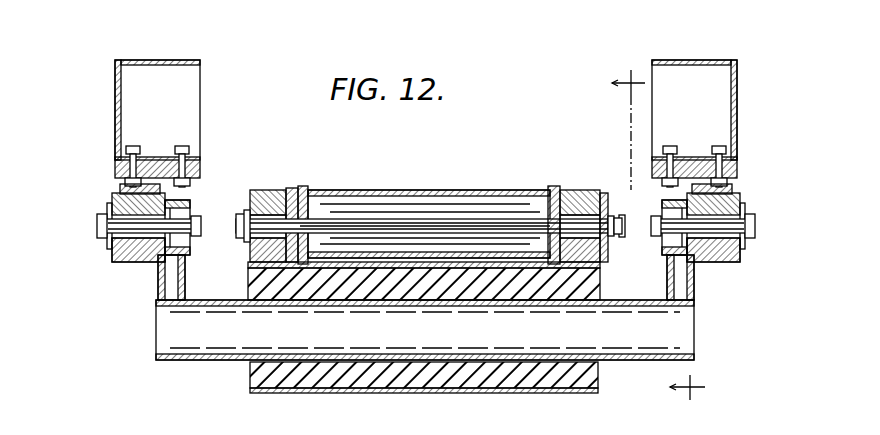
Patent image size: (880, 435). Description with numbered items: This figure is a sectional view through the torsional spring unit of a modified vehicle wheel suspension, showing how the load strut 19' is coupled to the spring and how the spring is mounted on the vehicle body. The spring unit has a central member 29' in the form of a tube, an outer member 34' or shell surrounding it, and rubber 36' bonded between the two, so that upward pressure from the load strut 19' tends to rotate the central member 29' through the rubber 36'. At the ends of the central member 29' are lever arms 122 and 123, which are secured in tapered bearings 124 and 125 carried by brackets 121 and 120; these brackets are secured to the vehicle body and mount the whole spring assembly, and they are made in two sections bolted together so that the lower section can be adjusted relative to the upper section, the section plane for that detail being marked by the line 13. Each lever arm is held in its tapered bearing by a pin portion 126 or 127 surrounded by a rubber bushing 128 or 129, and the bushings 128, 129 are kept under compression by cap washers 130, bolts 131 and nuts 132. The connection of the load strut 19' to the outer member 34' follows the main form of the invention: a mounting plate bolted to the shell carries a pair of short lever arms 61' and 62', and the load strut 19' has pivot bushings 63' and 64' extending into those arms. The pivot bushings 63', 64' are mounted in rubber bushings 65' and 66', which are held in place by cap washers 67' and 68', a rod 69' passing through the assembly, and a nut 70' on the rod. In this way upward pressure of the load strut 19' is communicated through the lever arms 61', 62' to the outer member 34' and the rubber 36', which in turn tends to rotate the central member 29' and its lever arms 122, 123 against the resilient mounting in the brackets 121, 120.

The bracket 121 is at (157, 84).
The bracket 120 is at (694, 84).
The cap washers 130 is at (200, 150).
The pin portion 126 is at (108, 205).
The rubber bushing 129 is at (745, 195).
The bolts 131 is at (400, 251).
The nuts 132 is at (197, 242).
The rubber bushing 128 is at (105, 250).
The pin portion 127 is at (744, 251).
The tapered bearing 124 is at (104, 234).
The tapered bearing 125 is at (742, 236).
The lever arm 122 is at (127, 288).
The lever arm 123 is at (724, 290).
The central member 29' is at (422, 357).
The outer member 34' is at (424, 346).
The rubber 36' is at (424, 395).
The load strut 19' is at (429, 199).
The rod 69' is at (428, 186).
The cap washer 67' is at (232, 217).
The lever arm 62' is at (259, 201).
The pivot bushing 64' is at (282, 201).
The rubber bushing 66' is at (310, 202).
The rubber bushing 65' is at (537, 202).
The pivot bushing 63' is at (574, 201).
The lever arm 61' is at (593, 201).
The cap washer 68' is at (626, 218).
The nut 70' is at (632, 238).
The section line 13- 13 is at (656, 235).